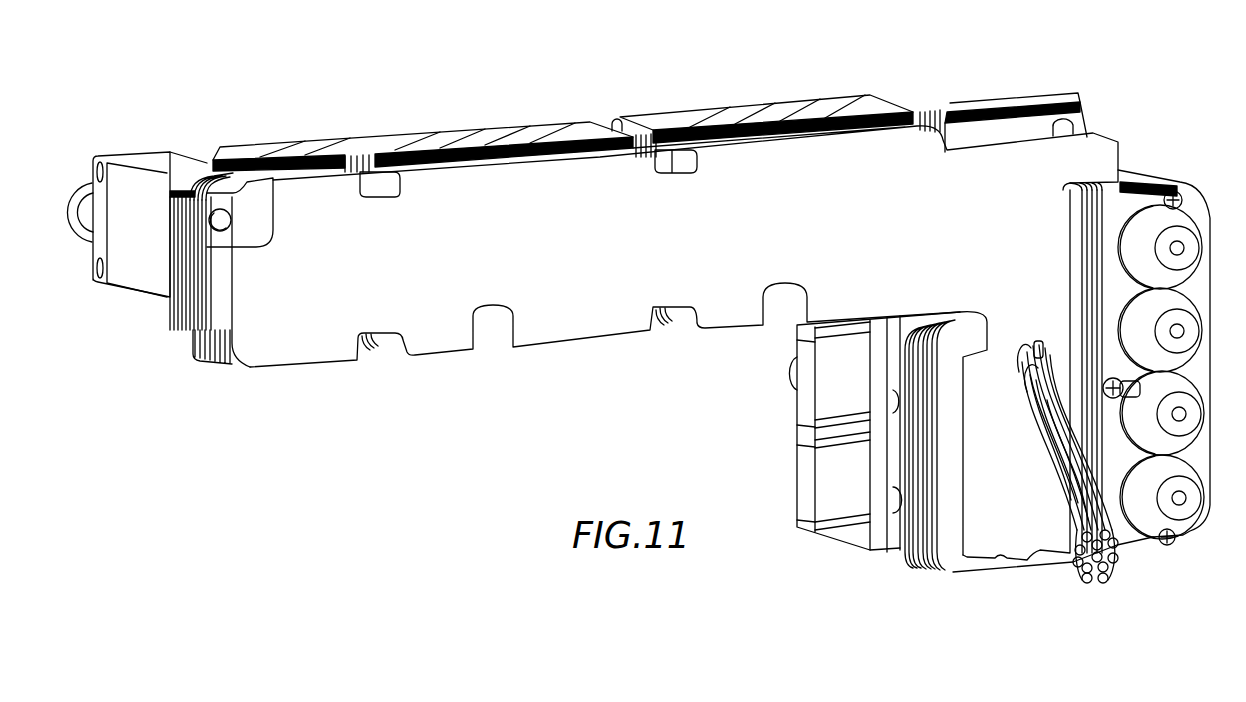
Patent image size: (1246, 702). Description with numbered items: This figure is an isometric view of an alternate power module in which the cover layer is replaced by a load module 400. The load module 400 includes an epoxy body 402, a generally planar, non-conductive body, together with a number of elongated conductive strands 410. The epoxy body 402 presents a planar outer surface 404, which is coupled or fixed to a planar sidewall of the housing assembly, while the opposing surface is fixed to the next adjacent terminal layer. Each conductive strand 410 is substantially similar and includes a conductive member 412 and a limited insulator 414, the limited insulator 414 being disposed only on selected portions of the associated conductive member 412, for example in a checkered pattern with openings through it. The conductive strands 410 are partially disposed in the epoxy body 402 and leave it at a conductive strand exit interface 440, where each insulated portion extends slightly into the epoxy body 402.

The load module 400 is at (457, 167).
The epoxy body 402 is at (717, 130).
The planar outer surface 404 is at (803, 163).
The conductive strand exit interface 440 is at (1040, 347).
The conductive strand 410 is at (1057, 440).
The limited insulator 414 is at (1080, 463).
The conductive member 412 is at (1107, 573).